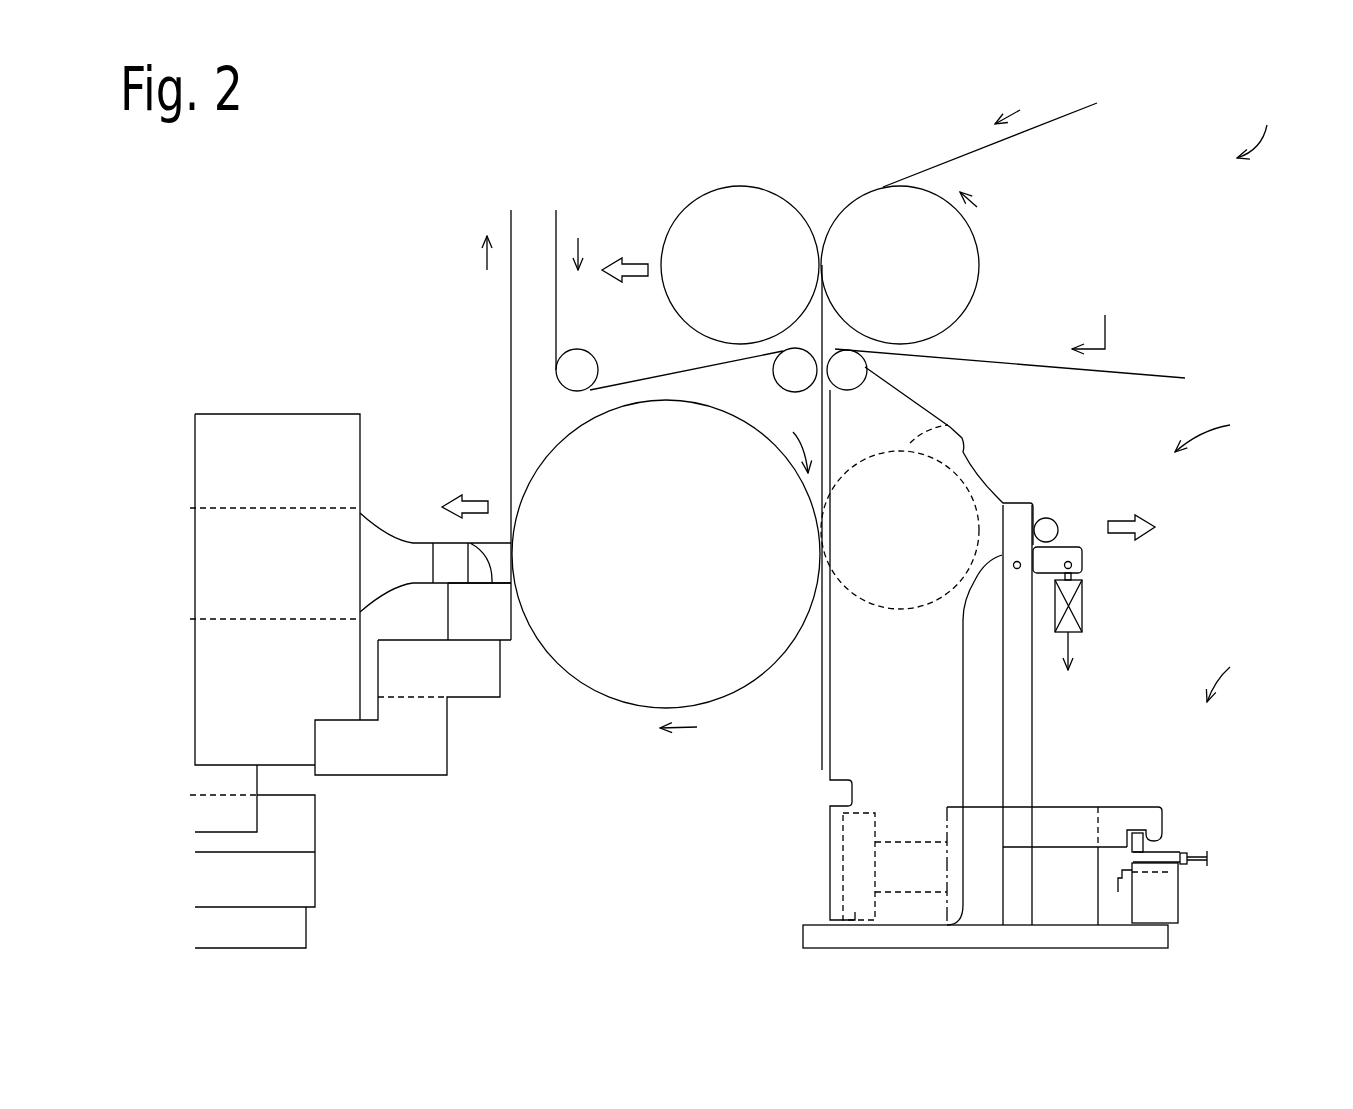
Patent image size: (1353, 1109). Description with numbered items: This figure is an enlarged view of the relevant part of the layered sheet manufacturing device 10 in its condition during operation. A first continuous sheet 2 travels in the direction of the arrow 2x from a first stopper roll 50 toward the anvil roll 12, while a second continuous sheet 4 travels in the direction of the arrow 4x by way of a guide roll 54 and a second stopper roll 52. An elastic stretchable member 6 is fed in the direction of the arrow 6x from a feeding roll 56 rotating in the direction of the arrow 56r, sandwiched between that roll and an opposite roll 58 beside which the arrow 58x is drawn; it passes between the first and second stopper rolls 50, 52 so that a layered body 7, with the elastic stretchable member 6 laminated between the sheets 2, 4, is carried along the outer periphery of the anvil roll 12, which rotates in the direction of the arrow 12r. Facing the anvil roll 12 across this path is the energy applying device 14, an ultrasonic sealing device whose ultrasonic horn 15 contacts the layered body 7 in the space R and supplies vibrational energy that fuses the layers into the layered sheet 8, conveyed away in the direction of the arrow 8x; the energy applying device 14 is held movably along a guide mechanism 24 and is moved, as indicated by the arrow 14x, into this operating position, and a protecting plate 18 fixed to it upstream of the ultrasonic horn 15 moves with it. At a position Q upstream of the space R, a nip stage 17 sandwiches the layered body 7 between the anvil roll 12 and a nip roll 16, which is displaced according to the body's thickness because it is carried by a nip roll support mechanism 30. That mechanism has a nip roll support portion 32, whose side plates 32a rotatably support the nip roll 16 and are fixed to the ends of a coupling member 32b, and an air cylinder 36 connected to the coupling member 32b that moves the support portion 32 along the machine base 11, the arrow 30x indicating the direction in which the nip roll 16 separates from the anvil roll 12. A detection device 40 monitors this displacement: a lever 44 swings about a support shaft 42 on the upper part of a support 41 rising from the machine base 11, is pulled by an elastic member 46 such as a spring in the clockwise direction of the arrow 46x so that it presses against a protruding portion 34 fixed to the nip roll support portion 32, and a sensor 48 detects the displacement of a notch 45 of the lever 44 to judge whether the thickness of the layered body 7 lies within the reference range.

The first continuous sheet 2 is at (1000, 358).
The arrow 2x is at (1096, 316).
The second continuous sheet 4 is at (556, 300).
The arrow 4x is at (578, 238).
The elastic stretchable member 6 is at (940, 162).
The arrow 6x is at (1020, 110).
The layered body 7 is at (666, 596).
The layered sheet 8 is at (511, 305).
The arrow 8x is at (487, 262).
The layered sheet manufacturing device 10 is at (1261, 126).
The machine base 11 is at (933, 940).
The anvil roll 12 is at (617, 680).
The arrow 12r is at (682, 732).
The energy applying device 14 is at (237, 414).
The arrow 14x is at (477, 495).
The ultrasonic horn 15 is at (395, 540).
The nip roll 16 is at (950, 425).
The nip stage 17 is at (791, 438).
The protecting plate 18 is at (515, 628).
The guide mechanism 24 is at (302, 823).
The nip roll support mechanism 30 is at (1217, 434).
The arrow 30x is at (1124, 515).
The nip roll support portion 32 is at (838, 655).
The side plates 32a is at (852, 743).
The coupling member 32b is at (835, 850).
The protruding portion 34 is at (1046, 520).
The air cylinder 36 is at (977, 823).
The detection device 40 is at (1233, 669).
The support 41 is at (1033, 875).
The support shaft 42 is at (1000, 556).
The lever 44 is at (1033, 695).
The notch 45 is at (1133, 857).
The elastic member 46 is at (1082, 607).
The arrow 46x is at (1073, 643).
The sensor 48 is at (1170, 852).
The first stopper roll 50 is at (857, 393).
The second stopper roll 52 is at (787, 373).
The guide roll 54 is at (583, 372).
The feeding roll 56 is at (957, 252).
The arrow 56r is at (977, 207).
The opposite roll 58 is at (730, 196).
The direction 58x is at (635, 258).
The position Q is at (818, 537).
The space R is at (513, 562).